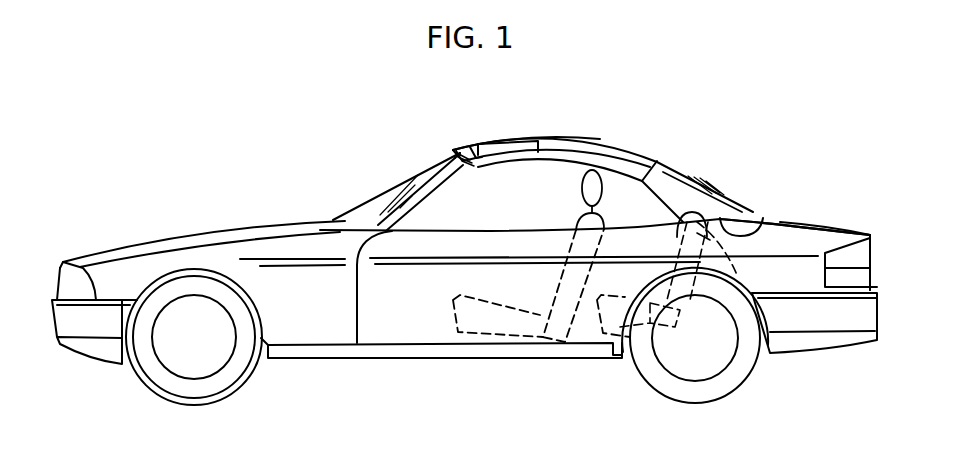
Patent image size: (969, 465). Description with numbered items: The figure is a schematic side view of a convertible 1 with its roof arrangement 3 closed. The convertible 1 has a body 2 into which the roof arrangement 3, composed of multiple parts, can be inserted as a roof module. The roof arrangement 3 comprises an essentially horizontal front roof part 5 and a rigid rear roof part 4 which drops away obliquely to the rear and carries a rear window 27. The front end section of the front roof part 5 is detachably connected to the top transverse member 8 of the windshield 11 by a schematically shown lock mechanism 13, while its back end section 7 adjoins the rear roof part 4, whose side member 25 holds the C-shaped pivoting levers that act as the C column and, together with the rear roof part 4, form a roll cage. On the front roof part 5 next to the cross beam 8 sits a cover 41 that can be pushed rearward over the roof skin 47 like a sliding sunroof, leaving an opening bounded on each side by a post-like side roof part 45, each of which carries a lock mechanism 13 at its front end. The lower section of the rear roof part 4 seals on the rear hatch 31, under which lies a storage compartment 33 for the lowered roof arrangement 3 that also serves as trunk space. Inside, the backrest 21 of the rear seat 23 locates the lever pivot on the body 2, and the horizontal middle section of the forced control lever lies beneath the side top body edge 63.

The convertible 1 is at (288, 148).
The body 2 is at (380, 346).
The roof arrangement 3 is at (571, 128).
The rear roof part 4 is at (720, 195).
The front roof part 5 is at (600, 147).
The back end section 7 is at (653, 158).
The top transverse member 8 is at (460, 149).
The windshield 11 is at (383, 190).
The lock mechanism 13 is at (472, 145).
The backrest 21 is at (720, 250).
The rear seat 23 is at (612, 313).
The side member 25 is at (667, 190).
The rear window 27 is at (740, 200).
The rear hatch 31 is at (833, 223).
The storage compartment 33 is at (773, 240).
The cover 41 is at (488, 145).
The side roof part 45 is at (512, 157).
The roof skin 47 is at (630, 148).
The side top body edge 63 is at (770, 235).